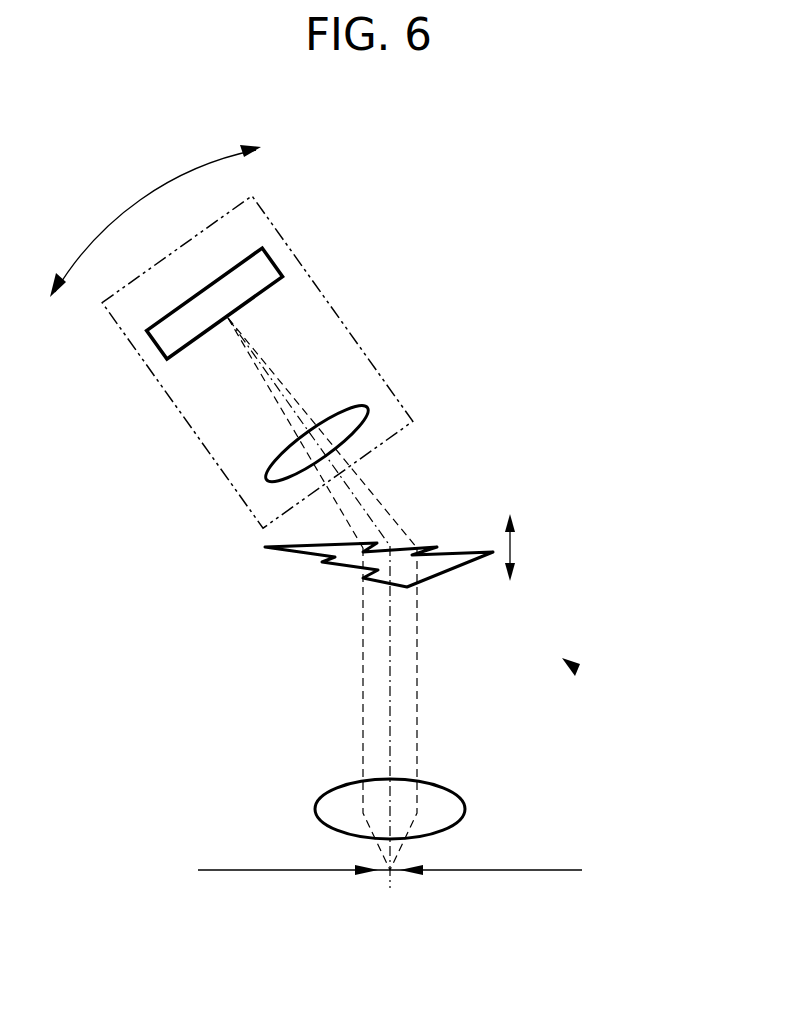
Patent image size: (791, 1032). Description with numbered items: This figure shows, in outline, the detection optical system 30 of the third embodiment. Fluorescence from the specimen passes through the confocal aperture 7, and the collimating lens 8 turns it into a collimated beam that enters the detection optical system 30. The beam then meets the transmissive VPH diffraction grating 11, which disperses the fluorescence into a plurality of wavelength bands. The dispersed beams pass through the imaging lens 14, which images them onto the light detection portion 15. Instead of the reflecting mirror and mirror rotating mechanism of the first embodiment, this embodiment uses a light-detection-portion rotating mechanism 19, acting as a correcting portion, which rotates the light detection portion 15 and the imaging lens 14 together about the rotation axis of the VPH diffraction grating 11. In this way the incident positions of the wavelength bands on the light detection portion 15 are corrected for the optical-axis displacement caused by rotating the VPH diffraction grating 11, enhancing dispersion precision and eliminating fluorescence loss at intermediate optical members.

The confocal aperture 7 is at (547, 870).
The collimating lens 8 is at (315, 808).
The transmissive VPH diffraction grating 11 is at (292, 555).
The imaging lens 14 is at (274, 456).
The light detection portion 15 is at (160, 342).
The light-detection-portion rotating mechanism 19 is at (330, 303).
The detection optical system 30 is at (577, 670).